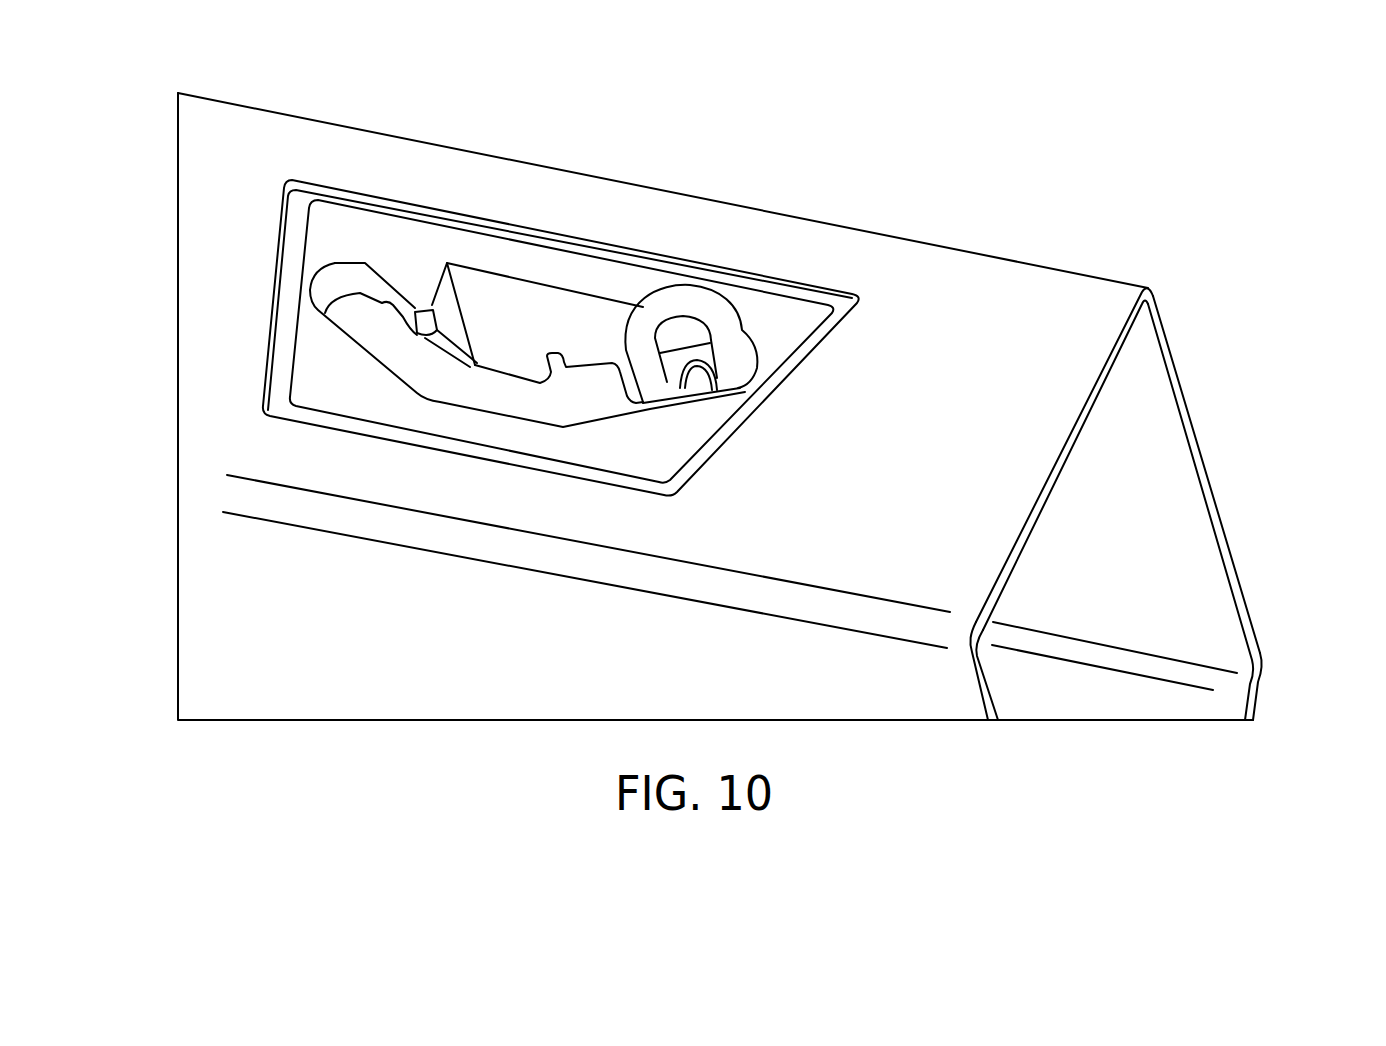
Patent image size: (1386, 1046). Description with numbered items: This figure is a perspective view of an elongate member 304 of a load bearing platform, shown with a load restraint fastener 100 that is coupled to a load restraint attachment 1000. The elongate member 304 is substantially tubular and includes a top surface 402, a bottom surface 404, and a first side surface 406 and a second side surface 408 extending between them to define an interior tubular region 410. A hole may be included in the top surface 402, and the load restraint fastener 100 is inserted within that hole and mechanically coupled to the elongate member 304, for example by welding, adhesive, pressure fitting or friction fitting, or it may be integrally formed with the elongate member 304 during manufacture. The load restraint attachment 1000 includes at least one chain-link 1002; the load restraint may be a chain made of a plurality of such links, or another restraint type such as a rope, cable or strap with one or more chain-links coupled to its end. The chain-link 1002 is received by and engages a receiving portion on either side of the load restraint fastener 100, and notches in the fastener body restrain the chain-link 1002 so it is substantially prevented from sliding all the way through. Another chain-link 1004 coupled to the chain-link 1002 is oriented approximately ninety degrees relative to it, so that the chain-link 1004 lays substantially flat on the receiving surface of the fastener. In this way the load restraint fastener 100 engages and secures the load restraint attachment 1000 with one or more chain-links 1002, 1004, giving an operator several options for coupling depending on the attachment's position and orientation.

The load restraint fastener 100 is at (786, 320).
The elongate member 304 is at (862, 721).
The top surface 402 is at (980, 254).
The bottom surface 404 is at (1257, 707).
The first side surface 406 is at (978, 695).
The second side surface 408 is at (1191, 419).
The interior tubular region 410 is at (1152, 592).
The load restraint attachment 1000 is at (702, 256).
The chain-link 1002 is at (697, 380).
The chain-link 1004 is at (643, 295).